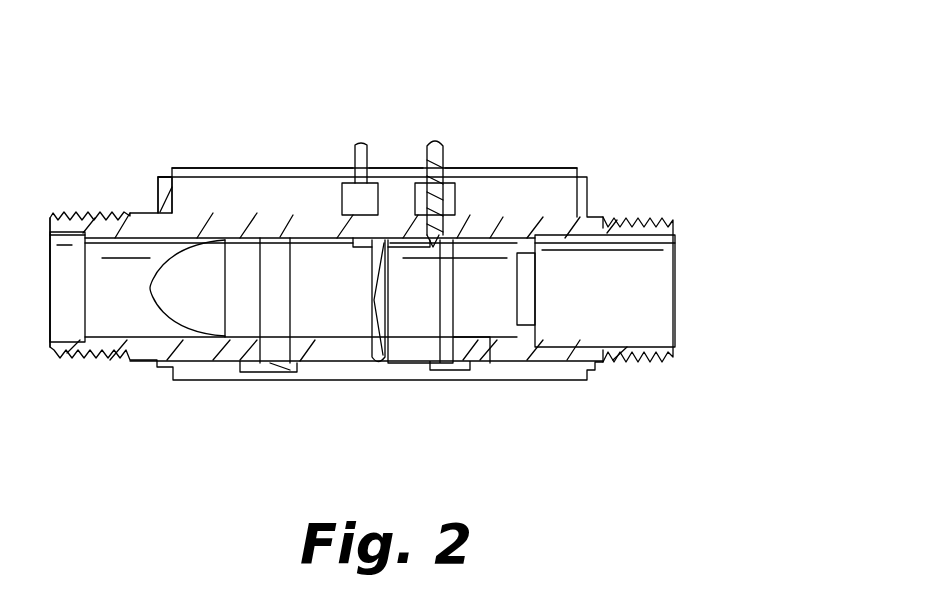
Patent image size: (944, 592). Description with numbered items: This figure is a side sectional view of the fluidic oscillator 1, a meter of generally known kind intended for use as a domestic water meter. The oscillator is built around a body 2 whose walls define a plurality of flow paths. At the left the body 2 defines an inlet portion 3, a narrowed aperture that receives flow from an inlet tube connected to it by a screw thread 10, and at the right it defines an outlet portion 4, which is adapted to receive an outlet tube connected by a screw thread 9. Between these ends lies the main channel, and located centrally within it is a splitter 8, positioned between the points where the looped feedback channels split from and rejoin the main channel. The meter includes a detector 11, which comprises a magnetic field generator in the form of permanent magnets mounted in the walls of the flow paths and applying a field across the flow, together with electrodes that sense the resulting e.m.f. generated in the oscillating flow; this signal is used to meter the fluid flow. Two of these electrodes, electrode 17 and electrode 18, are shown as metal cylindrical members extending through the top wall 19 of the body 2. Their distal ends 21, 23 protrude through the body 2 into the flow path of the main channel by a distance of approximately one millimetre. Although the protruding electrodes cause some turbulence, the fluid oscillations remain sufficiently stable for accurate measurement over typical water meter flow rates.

The fluidic oscillator 1 is at (128, 72).
The body 2 is at (523, 227).
The inlet portion 3 is at (188, 303).
The outlet portion 4 is at (613, 270).
The splitter 8 is at (390, 360).
The screw thread 9 is at (643, 367).
The screw thread 10 is at (85, 212).
The detector 11 is at (320, 117).
The electrode 17 is at (366, 141).
The electrode 18 is at (446, 134).
The top wall 19 is at (197, 222).
The distal end 21 is at (373, 236).
The distal end 23 is at (430, 244).